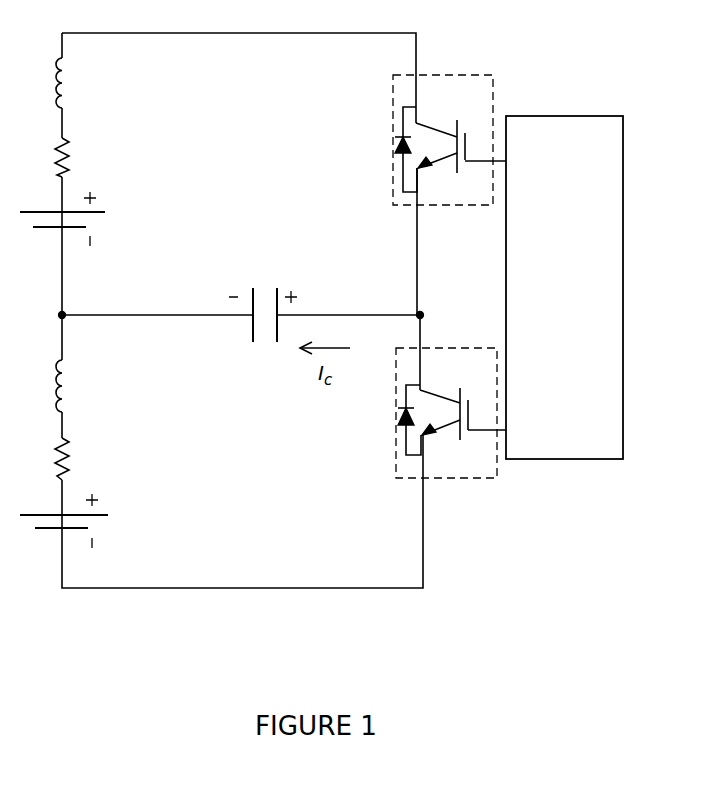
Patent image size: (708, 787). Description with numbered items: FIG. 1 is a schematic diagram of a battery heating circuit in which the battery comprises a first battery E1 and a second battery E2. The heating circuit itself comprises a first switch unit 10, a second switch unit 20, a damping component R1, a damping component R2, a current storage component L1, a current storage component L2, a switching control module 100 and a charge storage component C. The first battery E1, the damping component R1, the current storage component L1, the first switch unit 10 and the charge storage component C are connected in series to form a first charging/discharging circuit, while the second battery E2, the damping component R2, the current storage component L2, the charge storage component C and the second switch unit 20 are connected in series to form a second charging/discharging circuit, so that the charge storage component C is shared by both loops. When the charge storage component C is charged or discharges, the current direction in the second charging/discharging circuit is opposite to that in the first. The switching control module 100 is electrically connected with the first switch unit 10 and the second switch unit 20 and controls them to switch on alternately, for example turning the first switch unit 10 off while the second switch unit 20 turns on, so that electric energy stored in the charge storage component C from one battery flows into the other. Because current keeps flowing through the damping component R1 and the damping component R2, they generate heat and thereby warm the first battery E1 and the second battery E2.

The first switch unit 10 is at (449, 140).
The second switch unit 20 is at (451, 413).
The switching control module 100 is at (547, 342).
The current storage component L1 is at (80, 83).
The damping component R1 is at (80, 157).
The first battery E1 is at (80, 219).
The current storage component L2 is at (78, 386).
The damping component R2 is at (83, 459).
The second battery E2 is at (84, 521).
The charge storage component C is at (263, 298).